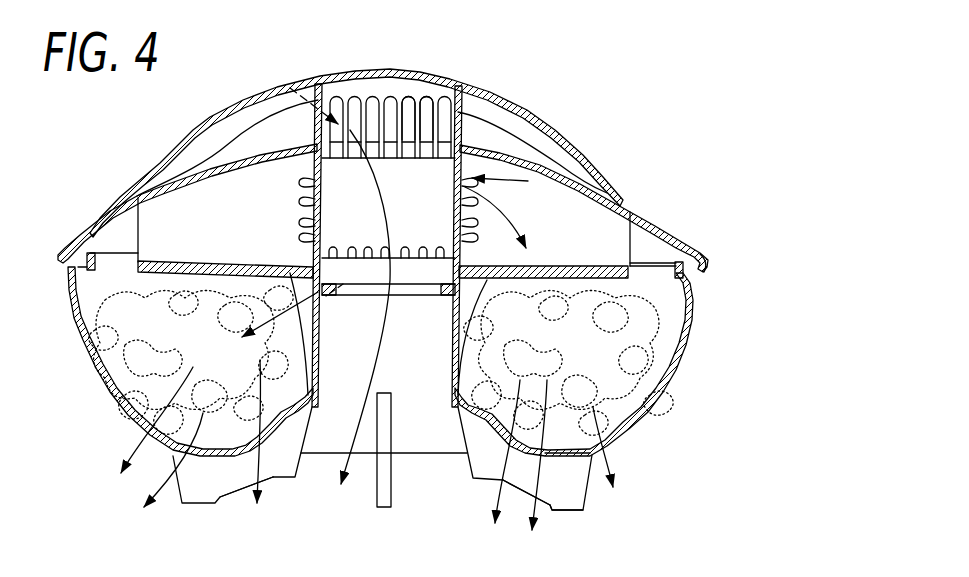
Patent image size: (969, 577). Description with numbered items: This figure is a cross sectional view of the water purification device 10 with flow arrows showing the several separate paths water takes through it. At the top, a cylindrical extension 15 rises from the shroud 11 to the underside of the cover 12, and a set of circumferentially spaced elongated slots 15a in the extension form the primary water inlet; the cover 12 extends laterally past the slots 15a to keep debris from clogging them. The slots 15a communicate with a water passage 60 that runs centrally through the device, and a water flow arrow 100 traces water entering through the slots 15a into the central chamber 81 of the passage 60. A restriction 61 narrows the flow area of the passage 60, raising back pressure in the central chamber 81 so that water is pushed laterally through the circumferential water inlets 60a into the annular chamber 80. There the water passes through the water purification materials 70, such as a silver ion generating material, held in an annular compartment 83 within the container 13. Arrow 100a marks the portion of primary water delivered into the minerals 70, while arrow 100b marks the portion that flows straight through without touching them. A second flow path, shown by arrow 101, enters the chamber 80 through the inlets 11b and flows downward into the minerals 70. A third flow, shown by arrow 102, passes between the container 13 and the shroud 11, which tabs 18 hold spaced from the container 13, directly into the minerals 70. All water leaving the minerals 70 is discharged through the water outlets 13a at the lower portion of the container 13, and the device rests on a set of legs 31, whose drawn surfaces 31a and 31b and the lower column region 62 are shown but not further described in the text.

The water purification device 10 is at (566, 103).
The shroud 11 is at (678, 238).
The inlets 11b is at (514, 213).
The cover 12 is at (498, 92).
The container 13 is at (692, 343).
The water outlets 13a is at (600, 441).
The cylindrical extension 15 is at (356, 238).
The elongated slots 15a is at (428, 101).
The tabs 18 is at (648, 276).
The legs 31 is at (200, 496).
The leg inclined surface 31a is at (236, 496).
The leg notch 31b is at (573, 512).
The water passage 60 is at (456, 172).
The circumferential water inlets 60a is at (423, 248).
The restriction 61 is at (430, 297).
The lower column 62 is at (428, 440).
The water purification materials 70 is at (613, 358).
The annular chamber 80 is at (176, 238).
The central chamber 81 is at (325, 222).
The annular compartment 83 is at (182, 352).
The water flow arrow 100 is at (286, 83).
The arrow 100a is at (269, 320).
The arrow 100b is at (383, 340).
The arrow 101 is at (470, 210).
The arrow 102 is at (712, 262).